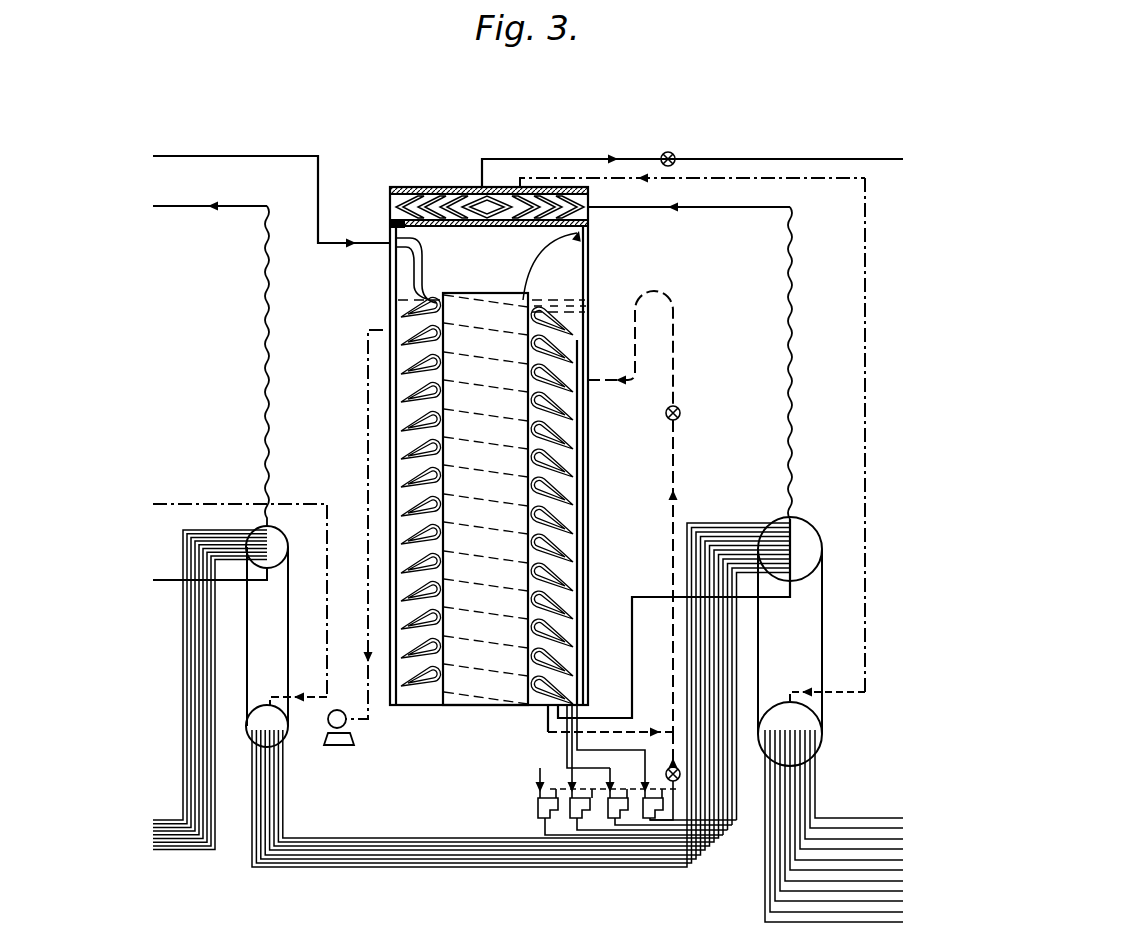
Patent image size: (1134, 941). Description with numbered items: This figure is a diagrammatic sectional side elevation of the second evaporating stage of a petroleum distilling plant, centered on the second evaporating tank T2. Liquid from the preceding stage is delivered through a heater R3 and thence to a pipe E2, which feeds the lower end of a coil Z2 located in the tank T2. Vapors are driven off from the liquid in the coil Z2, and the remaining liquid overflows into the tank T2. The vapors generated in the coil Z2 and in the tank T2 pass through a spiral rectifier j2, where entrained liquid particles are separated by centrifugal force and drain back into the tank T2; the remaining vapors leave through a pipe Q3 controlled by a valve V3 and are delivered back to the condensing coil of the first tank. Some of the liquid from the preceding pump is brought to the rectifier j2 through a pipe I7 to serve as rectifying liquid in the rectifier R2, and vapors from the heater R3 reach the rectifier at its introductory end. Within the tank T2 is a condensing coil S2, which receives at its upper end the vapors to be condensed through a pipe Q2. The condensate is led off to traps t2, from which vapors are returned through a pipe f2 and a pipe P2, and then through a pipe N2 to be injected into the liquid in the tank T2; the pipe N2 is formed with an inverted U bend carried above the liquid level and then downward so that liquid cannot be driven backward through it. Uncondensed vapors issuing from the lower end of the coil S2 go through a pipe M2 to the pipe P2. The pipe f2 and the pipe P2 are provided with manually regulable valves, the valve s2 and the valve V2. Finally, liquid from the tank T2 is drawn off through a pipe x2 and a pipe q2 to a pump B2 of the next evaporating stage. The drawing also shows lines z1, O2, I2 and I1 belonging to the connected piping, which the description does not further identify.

The pipe Q2 is at (272, 156).
The return line z1 is at (166, 207).
The spiral rectifier j2 is at (425, 187).
The pipe Q3 is at (598, 158).
The valve V3 is at (669, 151).
The pipe I7 is at (733, 180).
The coil Z2 is at (705, 209).
The second evaporating tank T2 is at (488, 446).
The coil S2 is at (553, 318).
The pipe x2 is at (381, 328).
The pipe N2 is at (635, 318).
The valve V2 is at (681, 413).
The heating medium line O2 is at (788, 362).
The control line I2 is at (866, 434).
The control line I1 is at (207, 503).
The pipe q2 is at (367, 460).
The rectifier R2 is at (253, 653).
The pump B2 is at (328, 719).
The pipe P2 is at (672, 514).
The pipe E2 is at (632, 650).
The pipe M2 is at (546, 713).
The pipe f2 is at (672, 743).
The traps t2 is at (530, 808).
The valve s2 is at (612, 804).
The heater R3 is at (815, 701).